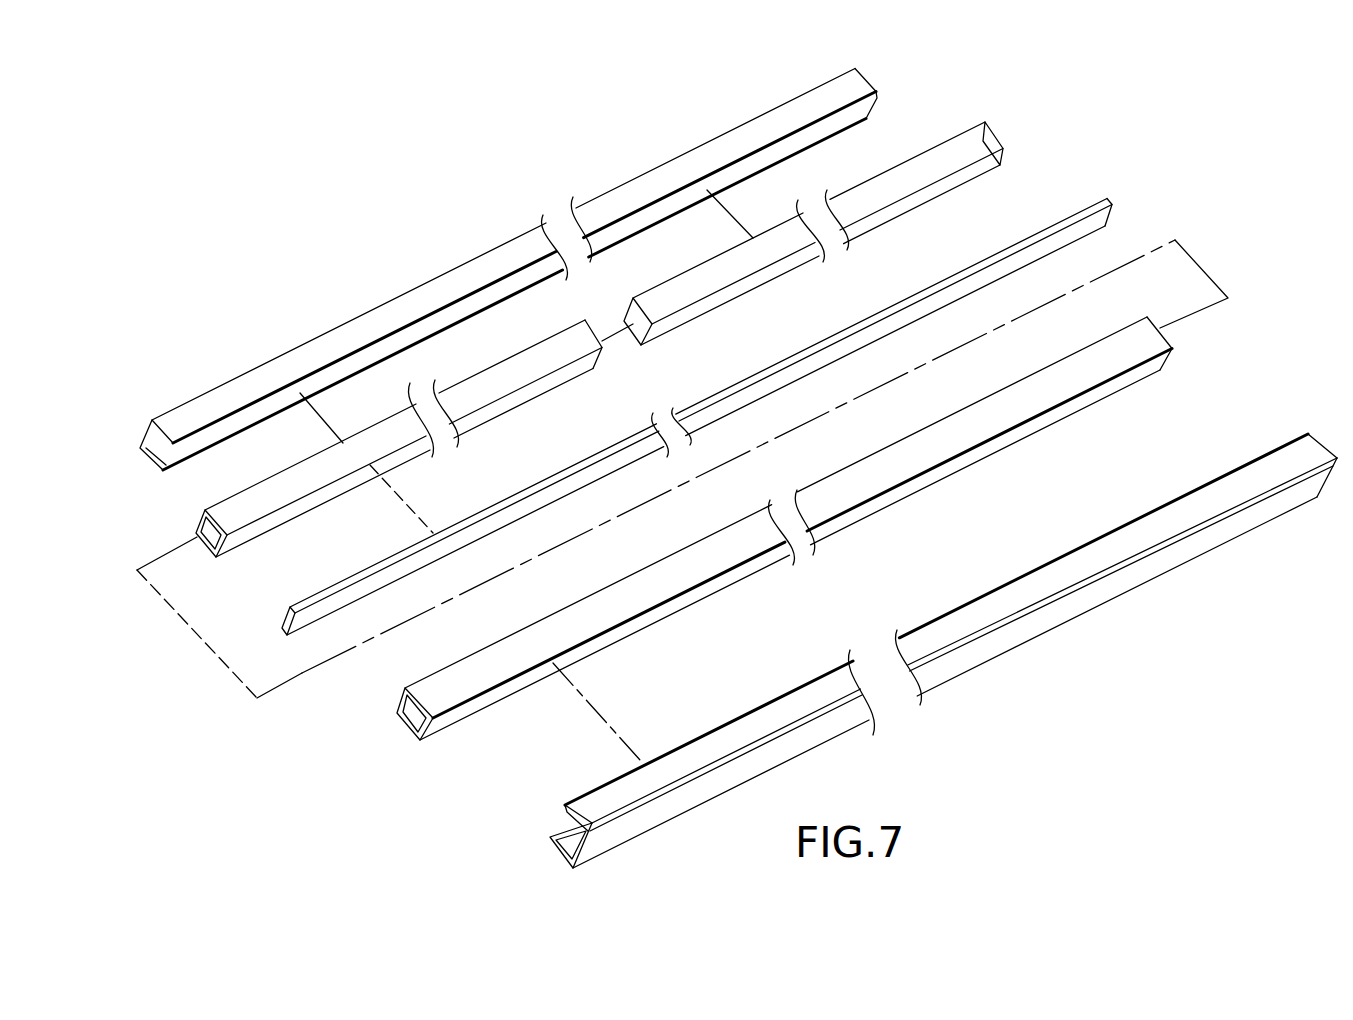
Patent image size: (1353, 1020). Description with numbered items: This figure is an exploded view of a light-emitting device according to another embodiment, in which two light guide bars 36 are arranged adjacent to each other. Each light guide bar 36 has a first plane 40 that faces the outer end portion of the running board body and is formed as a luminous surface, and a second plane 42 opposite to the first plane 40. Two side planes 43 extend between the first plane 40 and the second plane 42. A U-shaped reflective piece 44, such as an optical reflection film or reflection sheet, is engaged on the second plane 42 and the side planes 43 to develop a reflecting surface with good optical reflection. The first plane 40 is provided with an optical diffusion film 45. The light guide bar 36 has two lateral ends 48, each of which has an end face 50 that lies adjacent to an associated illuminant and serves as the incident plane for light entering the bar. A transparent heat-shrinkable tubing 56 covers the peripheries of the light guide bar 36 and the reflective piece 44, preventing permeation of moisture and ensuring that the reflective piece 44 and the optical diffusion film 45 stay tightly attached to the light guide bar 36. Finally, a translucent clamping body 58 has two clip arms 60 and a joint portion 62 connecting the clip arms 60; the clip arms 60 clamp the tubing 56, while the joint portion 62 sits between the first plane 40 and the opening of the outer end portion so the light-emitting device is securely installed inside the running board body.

The light guide bar 36 is at (621, 312).
The first plane 40 is at (958, 178).
The second plane 42 is at (940, 143).
The side planes 43 is at (678, 295).
The U-shaped reflective piece 44 is at (608, 208).
The optical diffusion film 45 is at (340, 602).
The lateral ends 48 is at (977, 149).
The end face 50 is at (217, 540).
The transparent heat-shrinkable tubing 56 is at (942, 467).
The translucent clamping body 58 is at (943, 651).
The clip arms 60 is at (1102, 552).
The joint portion 62 is at (1202, 548).